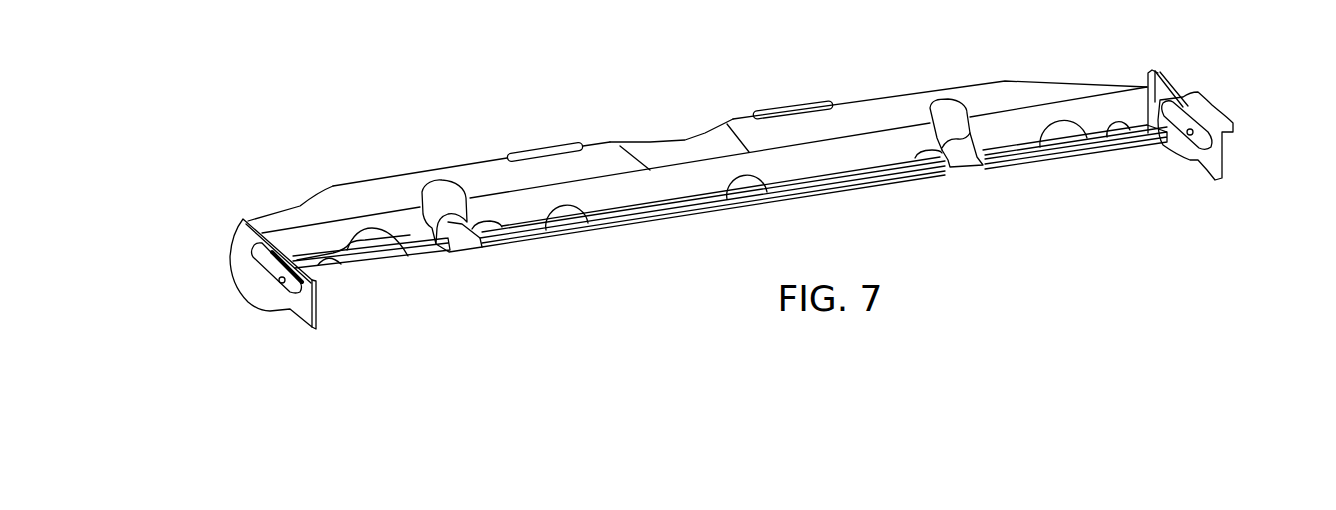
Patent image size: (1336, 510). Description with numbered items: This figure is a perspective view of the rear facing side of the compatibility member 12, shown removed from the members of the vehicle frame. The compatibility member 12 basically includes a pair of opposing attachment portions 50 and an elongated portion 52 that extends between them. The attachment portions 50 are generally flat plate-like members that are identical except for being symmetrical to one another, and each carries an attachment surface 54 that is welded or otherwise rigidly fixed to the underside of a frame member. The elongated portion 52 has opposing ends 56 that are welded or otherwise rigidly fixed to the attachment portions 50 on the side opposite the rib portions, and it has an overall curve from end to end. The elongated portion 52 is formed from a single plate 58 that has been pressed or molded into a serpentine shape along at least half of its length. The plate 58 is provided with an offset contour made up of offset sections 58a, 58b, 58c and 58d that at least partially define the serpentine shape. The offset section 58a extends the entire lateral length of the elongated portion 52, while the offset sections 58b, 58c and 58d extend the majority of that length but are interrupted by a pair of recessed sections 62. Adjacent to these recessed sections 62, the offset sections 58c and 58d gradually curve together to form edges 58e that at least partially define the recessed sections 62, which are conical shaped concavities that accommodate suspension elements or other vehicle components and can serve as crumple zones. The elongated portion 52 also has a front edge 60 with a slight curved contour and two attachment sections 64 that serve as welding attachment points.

The compatibility member 12 is at (566, 70).
The attachment portion 50 is at (255, 290).
The elongated portion 52 is at (886, 109).
The attachment surface 54 is at (293, 262).
The opposing ends 56 is at (1146, 105).
The plate 58 is at (602, 158).
The offset section 58a is at (321, 209).
The offset section 58b is at (337, 232).
The offset section 58c is at (400, 257).
The offset section 58d is at (348, 273).
The edges 58e is at (477, 248).
The front edge 60 is at (737, 117).
The recessed sections 62 is at (438, 197).
The attachment sections 64 is at (533, 149).